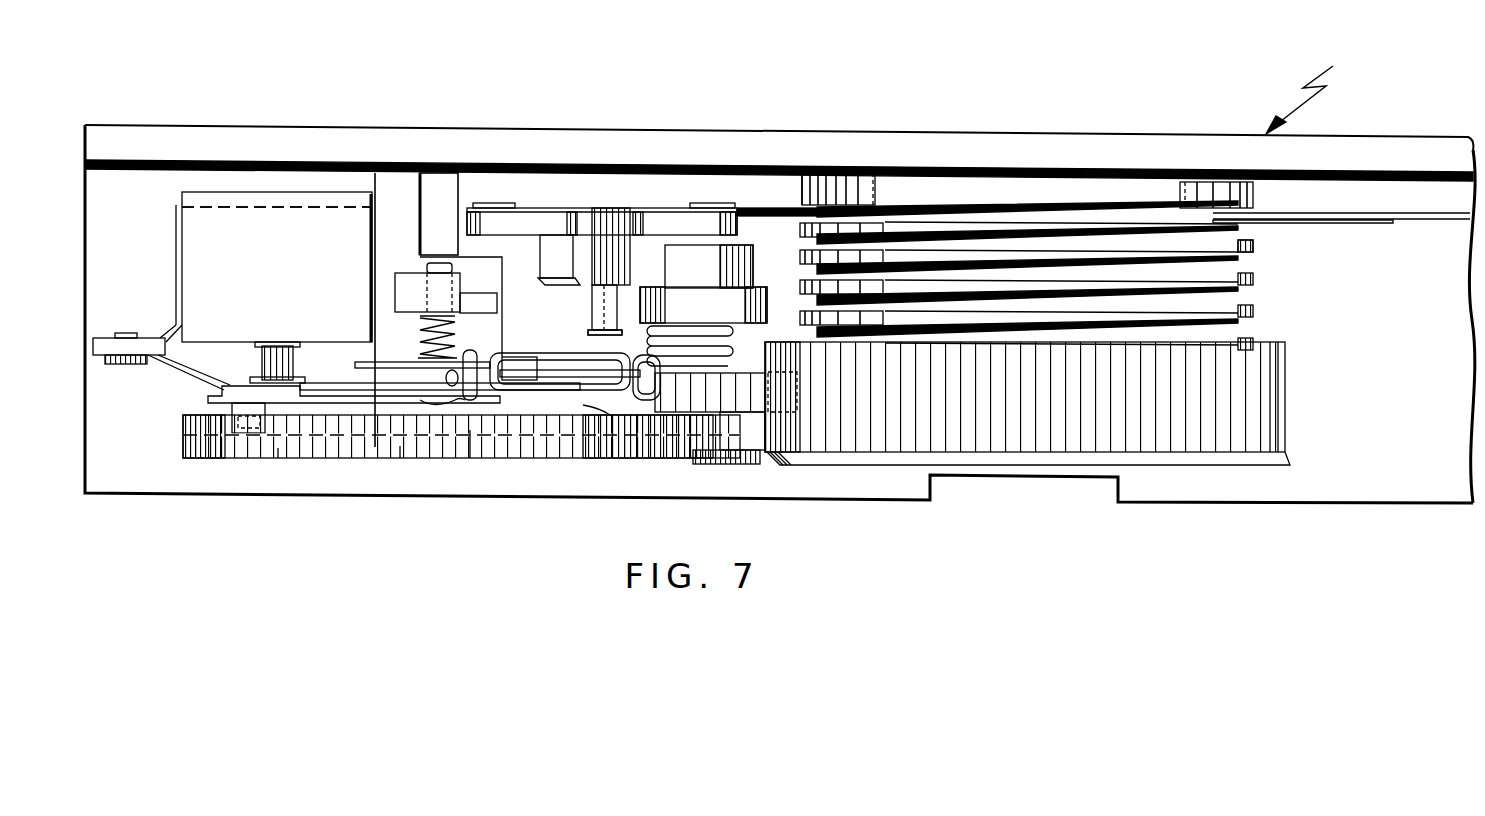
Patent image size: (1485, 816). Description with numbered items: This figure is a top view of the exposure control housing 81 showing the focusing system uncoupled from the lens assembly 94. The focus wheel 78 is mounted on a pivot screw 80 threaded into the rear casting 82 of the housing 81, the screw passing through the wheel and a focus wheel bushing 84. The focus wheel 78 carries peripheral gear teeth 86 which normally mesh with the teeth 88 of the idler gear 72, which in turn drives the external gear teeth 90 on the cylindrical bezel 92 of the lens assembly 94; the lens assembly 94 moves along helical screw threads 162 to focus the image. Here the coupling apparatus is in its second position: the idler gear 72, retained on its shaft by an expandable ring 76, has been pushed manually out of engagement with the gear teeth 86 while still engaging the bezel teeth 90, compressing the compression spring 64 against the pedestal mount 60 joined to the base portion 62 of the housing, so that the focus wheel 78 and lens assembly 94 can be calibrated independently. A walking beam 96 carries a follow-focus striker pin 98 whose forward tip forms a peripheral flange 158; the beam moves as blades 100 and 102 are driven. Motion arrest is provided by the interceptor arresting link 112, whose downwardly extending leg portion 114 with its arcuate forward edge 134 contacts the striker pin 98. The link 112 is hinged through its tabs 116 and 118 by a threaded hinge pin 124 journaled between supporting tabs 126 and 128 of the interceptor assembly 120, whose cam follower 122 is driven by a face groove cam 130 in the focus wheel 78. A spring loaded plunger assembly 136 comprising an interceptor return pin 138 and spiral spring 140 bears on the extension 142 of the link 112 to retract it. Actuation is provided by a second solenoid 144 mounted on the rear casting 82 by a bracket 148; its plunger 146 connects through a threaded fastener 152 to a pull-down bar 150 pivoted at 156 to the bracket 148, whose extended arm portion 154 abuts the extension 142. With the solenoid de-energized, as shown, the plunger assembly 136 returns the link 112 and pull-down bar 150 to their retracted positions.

The exposure control housing 81 is at (1310, 89).
The rear casting 82 is at (505, 150).
The blade 100 is at (1450, 212).
The blade 102 is at (1366, 222).
The helical screw threads 162 is at (1256, 246).
The lens assembly 94 is at (1266, 300).
The base portion 62 is at (1366, 427).
The cylindrical bezel 92 is at (1215, 466).
The external gear teeth 90 is at (845, 448).
The expandable ring 76 is at (738, 460).
The idler gear 72 is at (742, 431).
The supporting tab 126 is at (650, 392).
The interceptor assembly 120 is at (575, 405).
The focus wheel bushing 84 is at (470, 440).
The pivot screw 80 is at (400, 452).
The focus wheel 78 is at (298, 452).
The gear teeth 86 is at (278, 448).
The face groove cam 130 is at (235, 445).
The cam follower 122 is at (245, 409).
The pivot 156 is at (128, 365).
The pull-down bar 150 is at (175, 370).
The threaded fastener 152 is at (214, 380).
The plunger 146 is at (282, 362).
The bracket 148 is at (277, 284).
The second solenoid 144 is at (274, 208).
The spring loaded plunger assembly 136 is at (385, 300).
The interceptor return pin 138 is at (452, 266).
The spiral spring 140 is at (422, 336).
The supporting tab 128 is at (466, 354).
The extension 142 is at (362, 370).
The extended arm portion 154 is at (430, 405).
The tab 116 is at (468, 400).
The leg portion 114 is at (526, 362).
The arcuate forward edge 134 is at (535, 365).
The threaded hinge pin 124 is at (600, 371).
The interceptor arresting link 112 is at (640, 358).
The peripheral flange 158 is at (586, 331).
The follow-focus striker pin 98 is at (616, 302).
The walking beam 96 is at (536, 228).
The pedestal mount 60 is at (730, 259).
The tab 118 is at (652, 352).
The compression spring 64 is at (730, 341).
The teeth 88 is at (746, 375).